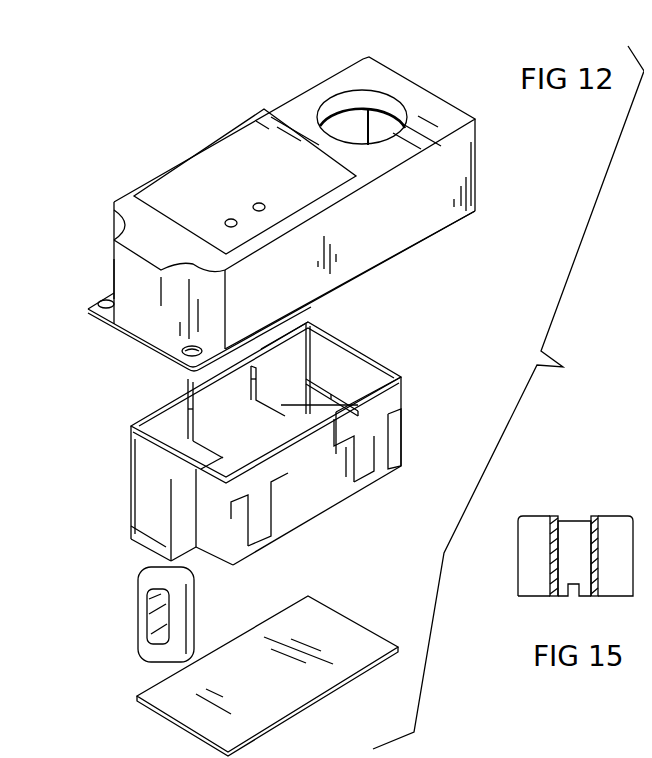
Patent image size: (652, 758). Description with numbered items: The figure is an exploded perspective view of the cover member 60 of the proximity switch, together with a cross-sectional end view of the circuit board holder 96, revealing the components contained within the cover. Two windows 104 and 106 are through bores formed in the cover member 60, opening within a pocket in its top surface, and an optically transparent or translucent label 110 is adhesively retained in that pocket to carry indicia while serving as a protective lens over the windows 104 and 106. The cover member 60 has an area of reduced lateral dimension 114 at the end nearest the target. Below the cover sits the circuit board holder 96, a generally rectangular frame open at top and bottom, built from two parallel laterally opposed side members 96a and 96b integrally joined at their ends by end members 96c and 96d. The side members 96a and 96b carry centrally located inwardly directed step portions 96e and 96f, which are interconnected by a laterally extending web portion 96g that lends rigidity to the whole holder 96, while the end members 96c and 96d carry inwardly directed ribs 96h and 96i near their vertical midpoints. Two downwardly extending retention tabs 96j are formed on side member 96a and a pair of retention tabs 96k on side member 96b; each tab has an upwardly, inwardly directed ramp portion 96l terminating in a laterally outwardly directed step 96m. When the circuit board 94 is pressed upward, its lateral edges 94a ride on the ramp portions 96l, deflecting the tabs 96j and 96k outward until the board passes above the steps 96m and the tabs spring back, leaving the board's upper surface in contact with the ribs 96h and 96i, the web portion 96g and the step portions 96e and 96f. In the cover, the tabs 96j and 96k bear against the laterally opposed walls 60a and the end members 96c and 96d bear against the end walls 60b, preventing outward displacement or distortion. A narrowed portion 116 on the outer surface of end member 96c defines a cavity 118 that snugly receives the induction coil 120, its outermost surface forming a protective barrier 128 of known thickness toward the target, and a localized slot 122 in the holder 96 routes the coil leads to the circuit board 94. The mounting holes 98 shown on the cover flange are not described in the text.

In FIG. 12, the cover member 60 is at (497, 177).
In FIG. 12, the laterally opposed walls 60a is at (345, 125).
In FIG. 12, the longitudinally opposed end walls 60b is at (380, 125).
In FIG. 12, the label 110 is at (245, 147).
In FIG. 12, the window 106 is at (252, 205).
In FIG. 12, the window 104 is at (224, 222).
In FIG. 12, the area of reduced lateral dimension 114 is at (88, 243).
In FIG. 12, the mounting holes 98 is at (103, 300).
In FIG. 12, the circuit board holder 96 is at (405, 362).
In FIG. 15, the circuit board holder 96 is at (595, 492).
In FIG. 12, the side member 96a is at (300, 322).
In FIG. 12, the side member 96b is at (388, 402).
In FIG. 12, the end member 96c is at (138, 447).
In FIG. 15, the end member 96c is at (530, 557).
In FIG. 12, the end member 96d is at (357, 390).
In FIG. 12, the step portion 96e is at (200, 405).
In FIG. 12, the step portion 96f is at (302, 463).
In FIG. 12, the web portion 96g is at (263, 422).
In FIG. 12, the rib 96h is at (230, 527).
In FIG. 12, the rib 96i is at (400, 427).
In FIG. 12, the retention tab 96j is at (268, 385).
In FIG. 12, the retention tab 96k is at (257, 530).
In FIG. 12, the ramp portion 96l is at (347, 468).
In FIG. 12, the step 96m is at (335, 458).
In FIG. 12, the narrowed portion 116 is at (140, 487).
In FIG. 15, the narrowed portion 116 is at (572, 517).
In FIG. 12, the protective barrier 128 is at (140, 533).
In FIG. 12, the induction coil 120 is at (142, 595).
In FIG. 12, the circuit board 94 is at (130, 684).
In FIG. 12, the lateral edges 94a is at (213, 650).
In FIG. 15, the cavity 118 is at (563, 538).
In FIG. 15, the localized slot 122 is at (572, 590).